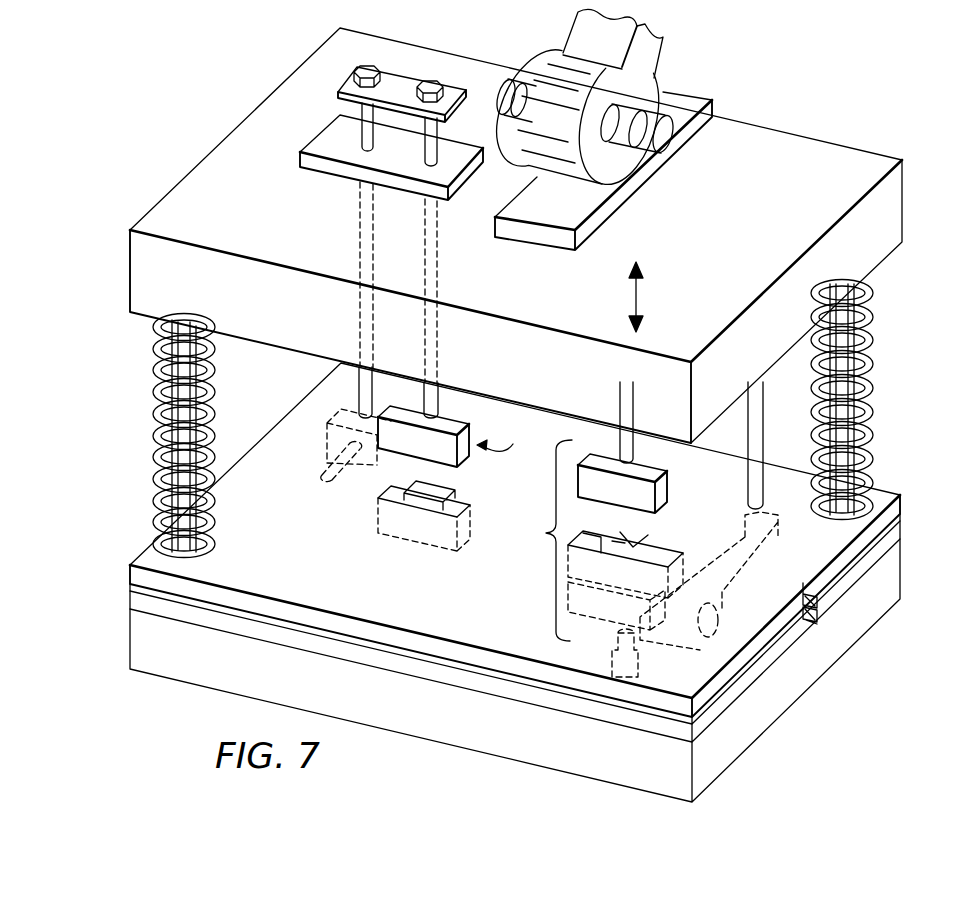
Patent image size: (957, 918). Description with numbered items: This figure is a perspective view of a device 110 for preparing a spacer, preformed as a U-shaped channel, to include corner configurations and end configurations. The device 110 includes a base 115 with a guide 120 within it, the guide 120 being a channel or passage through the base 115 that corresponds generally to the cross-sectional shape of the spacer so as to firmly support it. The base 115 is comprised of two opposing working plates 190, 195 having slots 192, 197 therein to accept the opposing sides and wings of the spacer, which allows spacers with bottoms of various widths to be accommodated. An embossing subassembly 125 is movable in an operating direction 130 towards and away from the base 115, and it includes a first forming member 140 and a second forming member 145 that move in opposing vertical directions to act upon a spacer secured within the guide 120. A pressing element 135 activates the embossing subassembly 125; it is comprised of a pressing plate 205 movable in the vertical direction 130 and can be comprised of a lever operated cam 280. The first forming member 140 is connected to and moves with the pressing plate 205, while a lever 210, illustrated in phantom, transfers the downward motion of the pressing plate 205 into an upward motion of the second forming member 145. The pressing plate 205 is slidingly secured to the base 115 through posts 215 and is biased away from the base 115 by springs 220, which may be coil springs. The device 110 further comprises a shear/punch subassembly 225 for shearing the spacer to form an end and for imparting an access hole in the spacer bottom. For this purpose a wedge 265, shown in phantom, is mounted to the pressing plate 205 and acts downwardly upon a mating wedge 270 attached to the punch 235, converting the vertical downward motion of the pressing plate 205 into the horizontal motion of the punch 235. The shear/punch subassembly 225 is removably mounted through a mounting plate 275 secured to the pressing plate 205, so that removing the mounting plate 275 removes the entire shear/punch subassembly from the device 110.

The device 110 is at (211, 87).
The pressing plate 205 is at (805, 148).
The mounting plate 275 is at (333, 140).
The lever operated cam 280 is at (553, 68).
The pressing element 135 is at (657, 50).
The operating direction 130 is at (646, 300).
The posts 215 is at (181, 433).
The springs 220 is at (873, 365).
The lever 210 is at (773, 535).
The first forming member 140 is at (665, 490).
The mating wedge 270 is at (402, 455).
The wedge 265 is at (340, 418).
The punch 235 is at (323, 467).
The shear/punch subassembly 225 is at (506, 434).
The embossing subassembly 125 is at (611, 540).
The second forming member 145 is at (670, 648).
The guide 120 is at (818, 594).
The working plate 190 is at (730, 672).
The working plate 195 is at (727, 697).
The base 115 is at (812, 663).
The slot 192 is at (817, 608).
The slot 197 is at (806, 622).